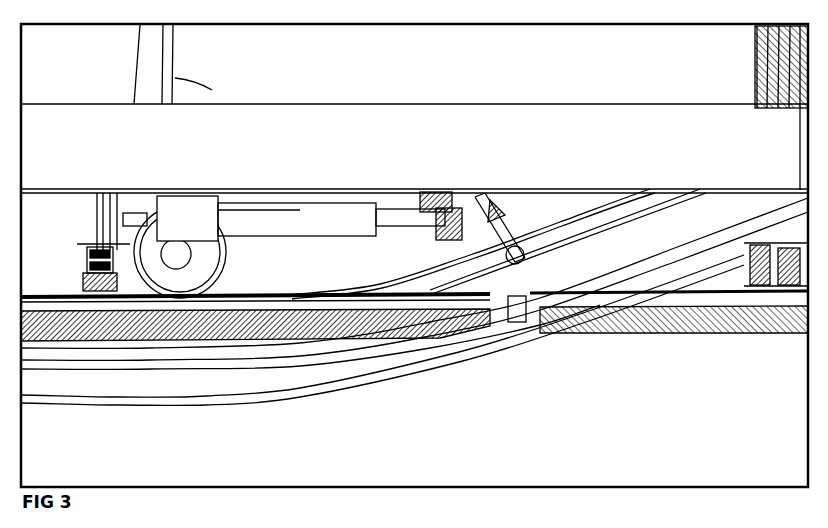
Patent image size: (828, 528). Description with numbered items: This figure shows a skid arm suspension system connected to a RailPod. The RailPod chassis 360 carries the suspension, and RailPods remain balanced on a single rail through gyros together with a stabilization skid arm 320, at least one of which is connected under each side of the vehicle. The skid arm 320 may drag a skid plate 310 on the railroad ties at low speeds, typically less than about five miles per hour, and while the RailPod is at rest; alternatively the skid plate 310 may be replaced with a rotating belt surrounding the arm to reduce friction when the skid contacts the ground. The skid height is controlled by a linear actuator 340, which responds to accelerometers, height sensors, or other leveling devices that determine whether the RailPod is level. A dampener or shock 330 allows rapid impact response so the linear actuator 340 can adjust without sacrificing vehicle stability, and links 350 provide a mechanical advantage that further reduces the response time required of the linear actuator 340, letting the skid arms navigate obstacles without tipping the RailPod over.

The skid plate 310 is at (206, 400).
The stabilization skid arm 320 is at (373, 358).
The dampener or shock 330 is at (515, 288).
The linear actuator 340 is at (297, 219).
The link 350 is at (502, 228).
The RailPod chassis 360 is at (425, 145).